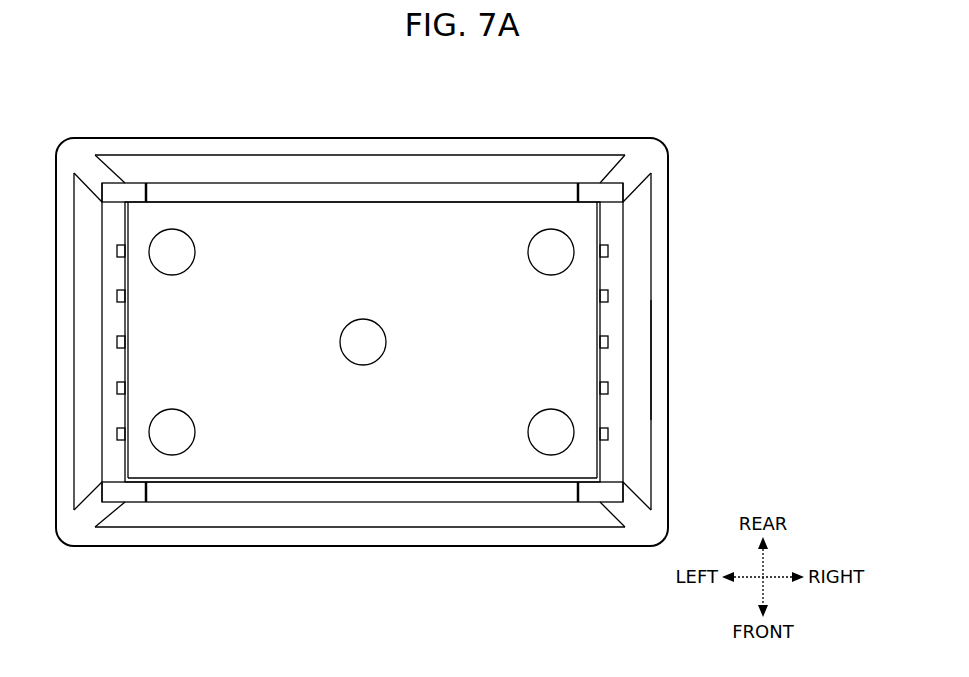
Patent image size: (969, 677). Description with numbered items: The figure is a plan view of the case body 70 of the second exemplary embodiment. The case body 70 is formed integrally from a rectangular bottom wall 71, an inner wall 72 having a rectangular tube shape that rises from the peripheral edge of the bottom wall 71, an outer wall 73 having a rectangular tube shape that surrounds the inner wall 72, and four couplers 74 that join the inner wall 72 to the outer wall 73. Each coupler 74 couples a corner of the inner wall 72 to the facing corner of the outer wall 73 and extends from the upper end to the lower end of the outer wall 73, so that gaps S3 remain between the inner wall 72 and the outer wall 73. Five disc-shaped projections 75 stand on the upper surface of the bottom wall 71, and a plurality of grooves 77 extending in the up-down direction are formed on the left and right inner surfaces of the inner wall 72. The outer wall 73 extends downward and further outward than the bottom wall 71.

The case body 70 is at (678, 178).
The bottom wall 71 is at (270, 457).
The inner wall 72 is at (613, 313).
The outer wall 73 is at (653, 395).
The coupler 74 is at (98, 176).
The projection 75 is at (183, 233).
The groove 77 is at (127, 343).
The gap S3 is at (378, 510).